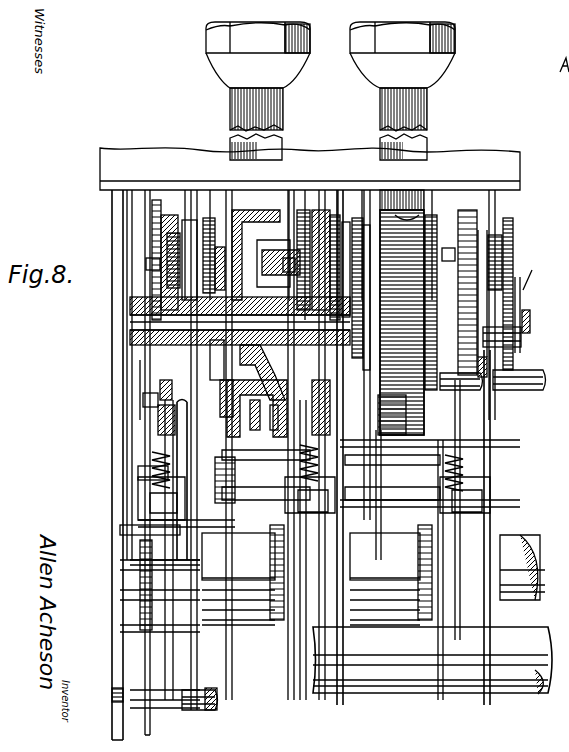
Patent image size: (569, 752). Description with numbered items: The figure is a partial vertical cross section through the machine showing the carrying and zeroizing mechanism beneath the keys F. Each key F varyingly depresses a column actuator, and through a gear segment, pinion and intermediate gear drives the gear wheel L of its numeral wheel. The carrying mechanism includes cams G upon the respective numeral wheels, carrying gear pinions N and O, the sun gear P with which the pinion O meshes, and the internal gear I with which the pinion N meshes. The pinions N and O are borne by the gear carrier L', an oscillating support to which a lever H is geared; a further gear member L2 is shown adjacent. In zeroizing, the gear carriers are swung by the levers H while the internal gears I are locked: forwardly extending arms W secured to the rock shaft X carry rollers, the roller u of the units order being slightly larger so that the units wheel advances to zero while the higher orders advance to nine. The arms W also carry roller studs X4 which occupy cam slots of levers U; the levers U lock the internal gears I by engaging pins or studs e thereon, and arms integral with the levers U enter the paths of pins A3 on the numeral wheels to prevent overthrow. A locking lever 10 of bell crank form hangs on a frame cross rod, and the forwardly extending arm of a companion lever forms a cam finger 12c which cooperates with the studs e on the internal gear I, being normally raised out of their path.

The keys F is at (372, 64).
The lever L2 is at (188, 230).
The gear carrier L' is at (330, 237).
The gear wheel L is at (366, 229).
The carrying gear pinion O is at (210, 230).
The internal gear I is at (305, 149).
The cam finger 12c is at (152, 211).
The carrying gear pinion N is at (165, 243).
The pins or studs e is at (447, 243).
The cams G is at (208, 250).
The sun gear P is at (214, 355).
The pins or studs A3 is at (225, 392).
The lever H is at (182, 462).
The levers U is at (150, 428).
The roller u is at (148, 487).
The arms W is at (130, 580).
The roller studs X4 is at (140, 560).
The rock shaft X is at (540, 572).
The locking lever 10 is at (146, 722).